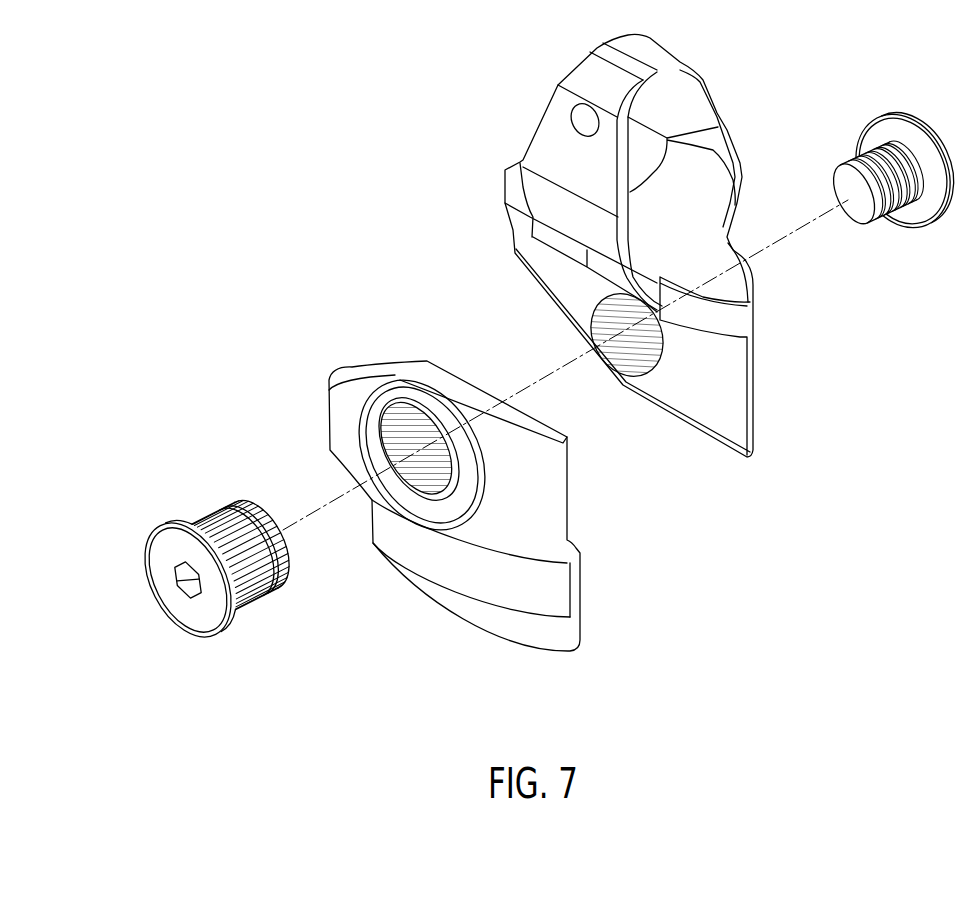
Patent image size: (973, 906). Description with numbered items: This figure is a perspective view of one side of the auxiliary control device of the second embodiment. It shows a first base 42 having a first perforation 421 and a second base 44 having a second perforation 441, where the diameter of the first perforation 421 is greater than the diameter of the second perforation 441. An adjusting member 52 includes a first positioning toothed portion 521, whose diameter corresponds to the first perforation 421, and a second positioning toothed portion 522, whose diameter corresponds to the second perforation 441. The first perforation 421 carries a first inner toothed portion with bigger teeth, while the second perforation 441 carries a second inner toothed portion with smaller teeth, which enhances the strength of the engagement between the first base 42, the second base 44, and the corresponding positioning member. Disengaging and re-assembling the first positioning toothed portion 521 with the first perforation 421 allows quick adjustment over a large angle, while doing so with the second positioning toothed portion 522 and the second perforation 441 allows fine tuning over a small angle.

The first base 42 is at (454, 484).
The first perforation 421 is at (397, 394).
The second base 44 is at (714, 300).
The second perforation 441 is at (622, 385).
The adjusting member 52 is at (236, 527).
The first positioning toothed portion 521 is at (197, 520).
The second positioning toothed portion 522 is at (245, 503).